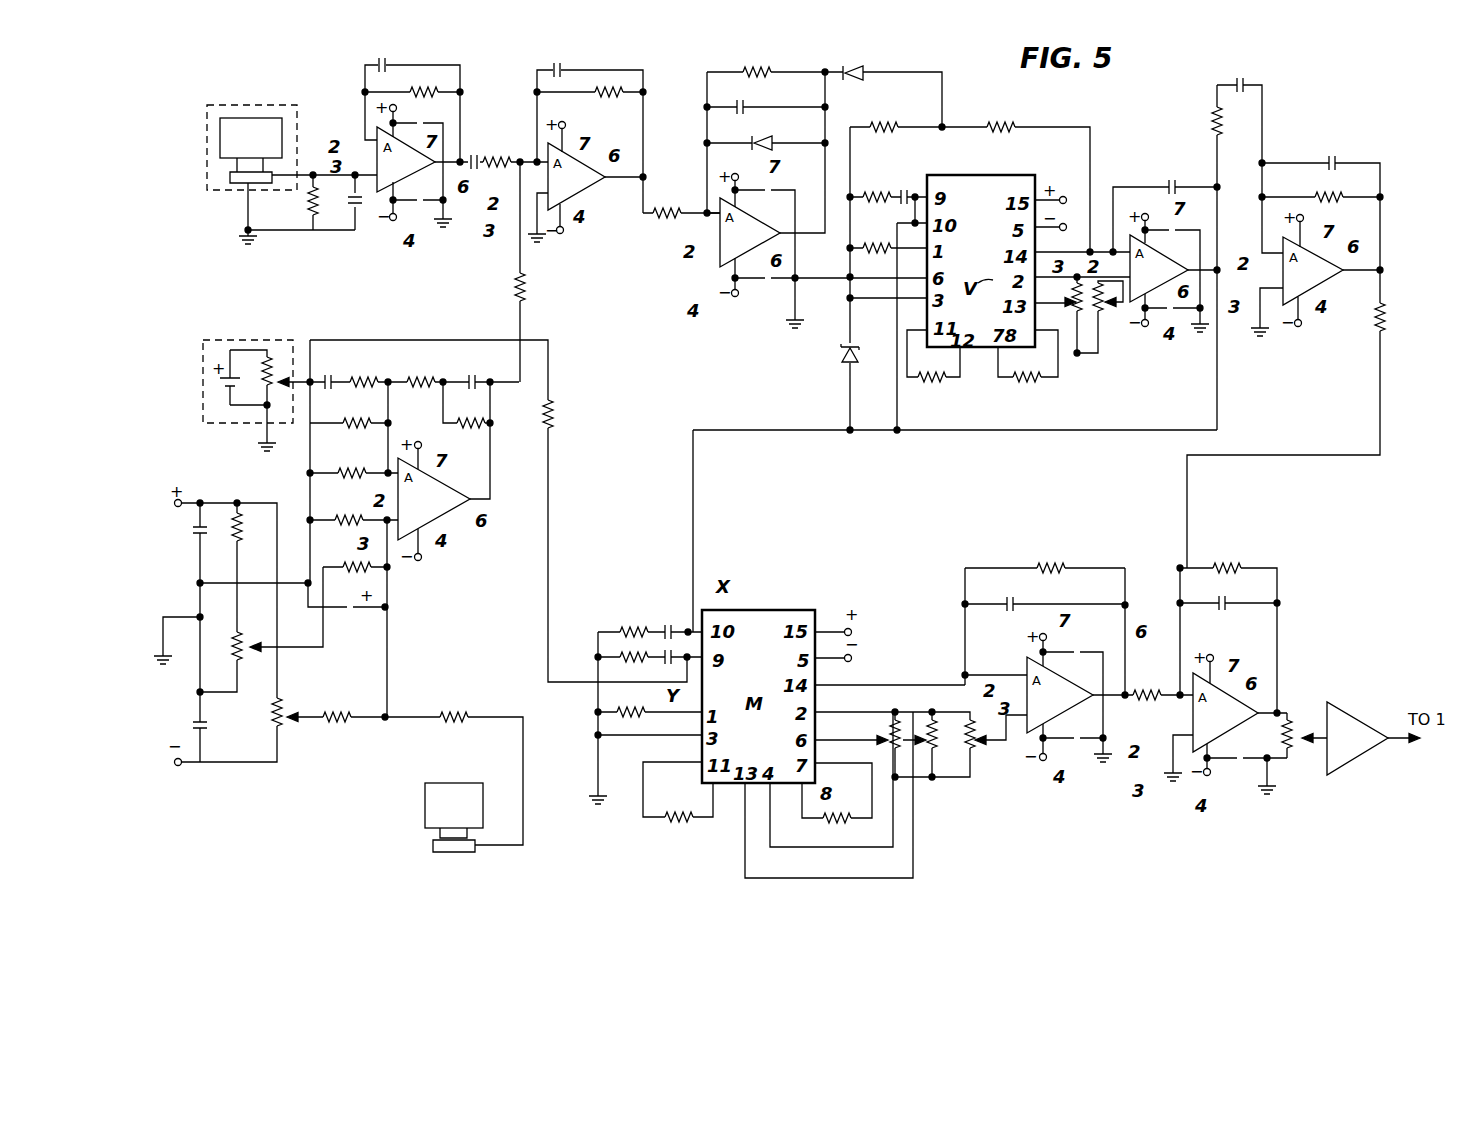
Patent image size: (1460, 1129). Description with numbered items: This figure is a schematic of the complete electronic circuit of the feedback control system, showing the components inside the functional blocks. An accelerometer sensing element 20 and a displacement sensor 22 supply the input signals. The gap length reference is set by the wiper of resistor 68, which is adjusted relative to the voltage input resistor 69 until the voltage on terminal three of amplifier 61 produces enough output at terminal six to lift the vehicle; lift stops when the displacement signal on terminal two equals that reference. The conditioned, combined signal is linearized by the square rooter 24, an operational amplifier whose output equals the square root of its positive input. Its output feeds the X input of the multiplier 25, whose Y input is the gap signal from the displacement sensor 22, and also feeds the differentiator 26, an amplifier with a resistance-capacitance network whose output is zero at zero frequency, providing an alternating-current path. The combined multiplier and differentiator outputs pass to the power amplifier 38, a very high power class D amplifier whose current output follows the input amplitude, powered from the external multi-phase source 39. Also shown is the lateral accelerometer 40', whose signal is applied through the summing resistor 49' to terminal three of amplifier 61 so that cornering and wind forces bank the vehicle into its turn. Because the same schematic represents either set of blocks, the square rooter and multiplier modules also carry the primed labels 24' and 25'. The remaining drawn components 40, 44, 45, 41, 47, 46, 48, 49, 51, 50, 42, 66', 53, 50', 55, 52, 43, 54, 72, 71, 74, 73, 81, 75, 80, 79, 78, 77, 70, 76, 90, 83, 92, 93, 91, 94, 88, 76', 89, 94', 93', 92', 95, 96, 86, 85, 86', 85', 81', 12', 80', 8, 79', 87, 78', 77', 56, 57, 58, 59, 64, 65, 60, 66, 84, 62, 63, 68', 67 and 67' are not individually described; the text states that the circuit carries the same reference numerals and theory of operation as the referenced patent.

The accelerometer sensing element 20 is at (264, 100).
The cathode ray tube display 40 is at (251, 150).
The resistor 44 is at (310, 208).
The capacitor 45 is at (355, 204).
The operational amplifier 41 is at (406, 159).
The capacitor 47 is at (383, 58).
The resistor 46 is at (440, 88).
The capacitor 48 is at (475, 155).
The resistor 49 is at (506, 145).
The capacitor 51 is at (560, 63).
The resistor 50 is at (623, 67).
The operational amplifier 42 is at (576, 176).
The resistor 66' is at (549, 279).
The resistor 53 is at (663, 210).
The resistor 50' is at (768, 54).
The capacitor 55 is at (745, 102).
The diode 52 is at (765, 136).
The operational amplifier 43 is at (750, 232).
The diode 54 is at (858, 68).
The resistor 72 is at (886, 124).
The resistor 71 is at (1002, 124).
The resistor 74 is at (873, 192).
The capacitor 73 is at (905, 190).
The resistor 81 is at (874, 234).
The analog divider module 24' is at (981, 261).
The square rooter 24 is at (1111, 169).
The zener diode 75 is at (840, 352).
The resistor 80 is at (935, 395).
The resistor 79 is at (1029, 400).
The potentiometer 78 is at (1096, 332).
The potentiometer 77 is at (1124, 323).
The operational amplifier 70 is at (1159, 268).
The capacitor 76 is at (1179, 172).
The resistor 90 is at (1212, 124).
The capacitor 83 is at (1238, 78).
The differentiator 26 is at (1329, 133).
The capacitor 92 is at (1353, 149).
The resistor 93 is at (1343, 184).
The operational amplifier 91 is at (1313, 271).
The resistor 94 is at (1361, 320).
The resistor 88 is at (1055, 566).
The capacitor 76' is at (994, 596).
The operational amplifier 89 is at (1060, 695).
The resistor 94' is at (1141, 714).
The resistor 93' is at (1251, 553).
The capacitor 92' is at (1237, 618).
The operational amplifier 95 is at (1225, 712).
The potentiometer 96 is at (1295, 722).
The power amplifier 38 is at (1357, 738).
The external source of multi-phase power 39 is at (1355, 770).
The analog multiplier module 25' is at (758, 696).
The multiplier 25 is at (892, 624).
The resistor 86 is at (626, 616).
The capacitor 85 is at (669, 613).
The resistor 86' is at (601, 667).
The capacitor 85' is at (645, 667).
The resistor 81' is at (599, 723).
The module pin 12' is at (688, 795).
The resistor 80' is at (669, 842).
The module pin 8 is at (802, 790).
The resistor 79' is at (837, 845).
The potentiometer 87 is at (885, 735).
The potentiometer 78' is at (947, 776).
The potentiometer 77' is at (994, 763).
The displacement sensor 22 is at (232, 336).
The potentiometer 56 is at (270, 356).
The battery 57 is at (218, 385).
The capacitor 58 is at (330, 376).
The resistor 59 is at (368, 378).
The resistor 64 is at (420, 378).
The capacitor 65 is at (470, 376).
The resistor 60 is at (357, 418).
The resistor 66 is at (495, 428).
The resistor 84 is at (555, 414).
The resistor 62 is at (352, 470).
The resistor 63 is at (345, 516).
The amplifier 61 is at (434, 499).
The resistor 68' is at (343, 553).
The voltage input resistor 69 is at (240, 520).
The resistor 68 is at (197, 671).
The potentiometer 67 is at (302, 703).
The resistor 67' is at (351, 734).
The summing resistor 49' is at (463, 699).
The lateral accelerometer 40' is at (454, 817).